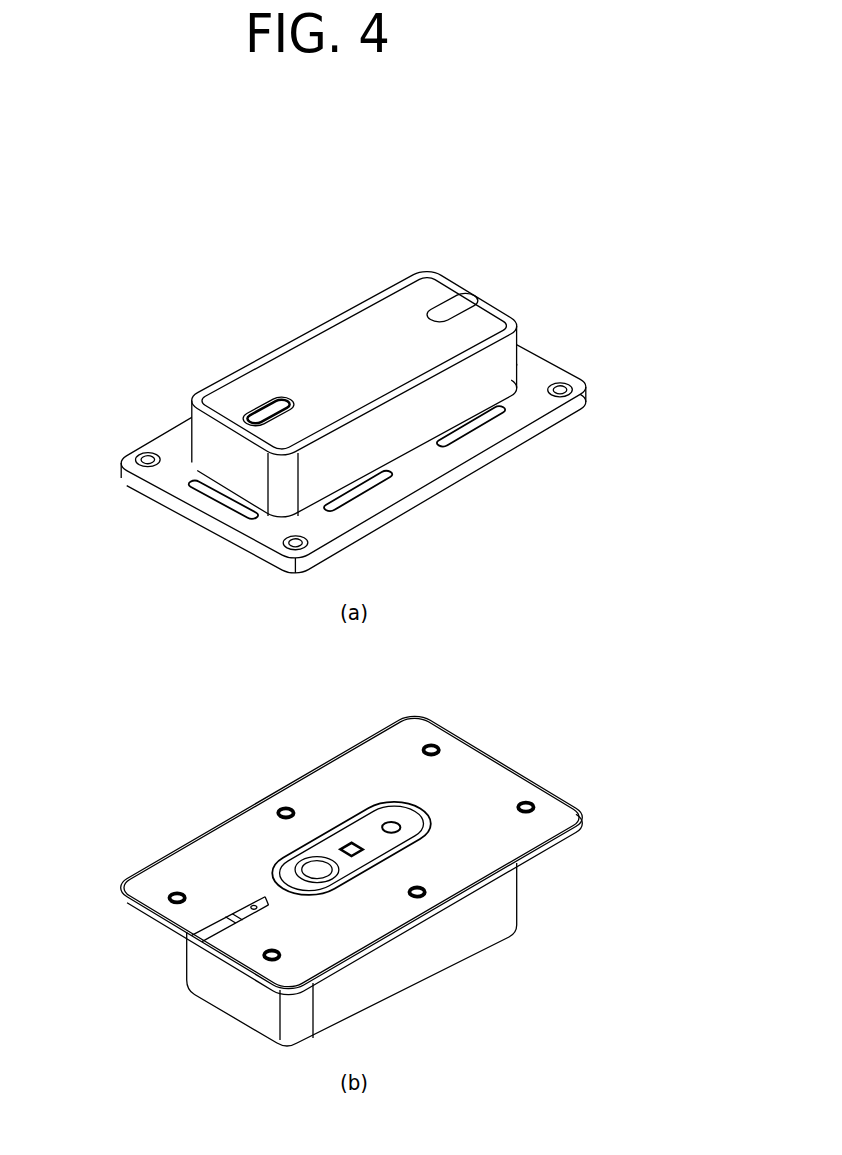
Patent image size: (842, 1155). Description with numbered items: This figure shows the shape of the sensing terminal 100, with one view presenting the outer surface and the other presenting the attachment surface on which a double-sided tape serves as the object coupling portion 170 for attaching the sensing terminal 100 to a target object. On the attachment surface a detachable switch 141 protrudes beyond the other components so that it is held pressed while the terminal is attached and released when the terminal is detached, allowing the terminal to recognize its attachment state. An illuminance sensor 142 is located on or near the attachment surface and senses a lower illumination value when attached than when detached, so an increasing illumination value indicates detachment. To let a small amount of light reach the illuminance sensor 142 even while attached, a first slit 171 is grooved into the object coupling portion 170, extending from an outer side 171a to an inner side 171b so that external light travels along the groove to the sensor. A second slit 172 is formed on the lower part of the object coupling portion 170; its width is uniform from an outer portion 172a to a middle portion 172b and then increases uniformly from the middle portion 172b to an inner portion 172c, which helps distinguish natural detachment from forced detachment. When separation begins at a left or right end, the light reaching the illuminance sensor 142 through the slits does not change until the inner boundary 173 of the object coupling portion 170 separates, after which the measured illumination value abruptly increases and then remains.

The sensing terminal 100 is at (115, 286).
The detachable switch 141 is at (350, 845).
The illuminance sensor 142 is at (392, 822).
The object coupling portion 170 is at (557, 808).
The first slit 171 is at (463, 780).
The outer side 171a is at (508, 759).
The inner side 171b is at (415, 806).
The second slit 172 is at (272, 885).
The outer portion 172a is at (252, 900).
The middle portion 172b is at (262, 893).
The inner portion 172c is at (273, 883).
The inner boundary 173 is at (350, 889).